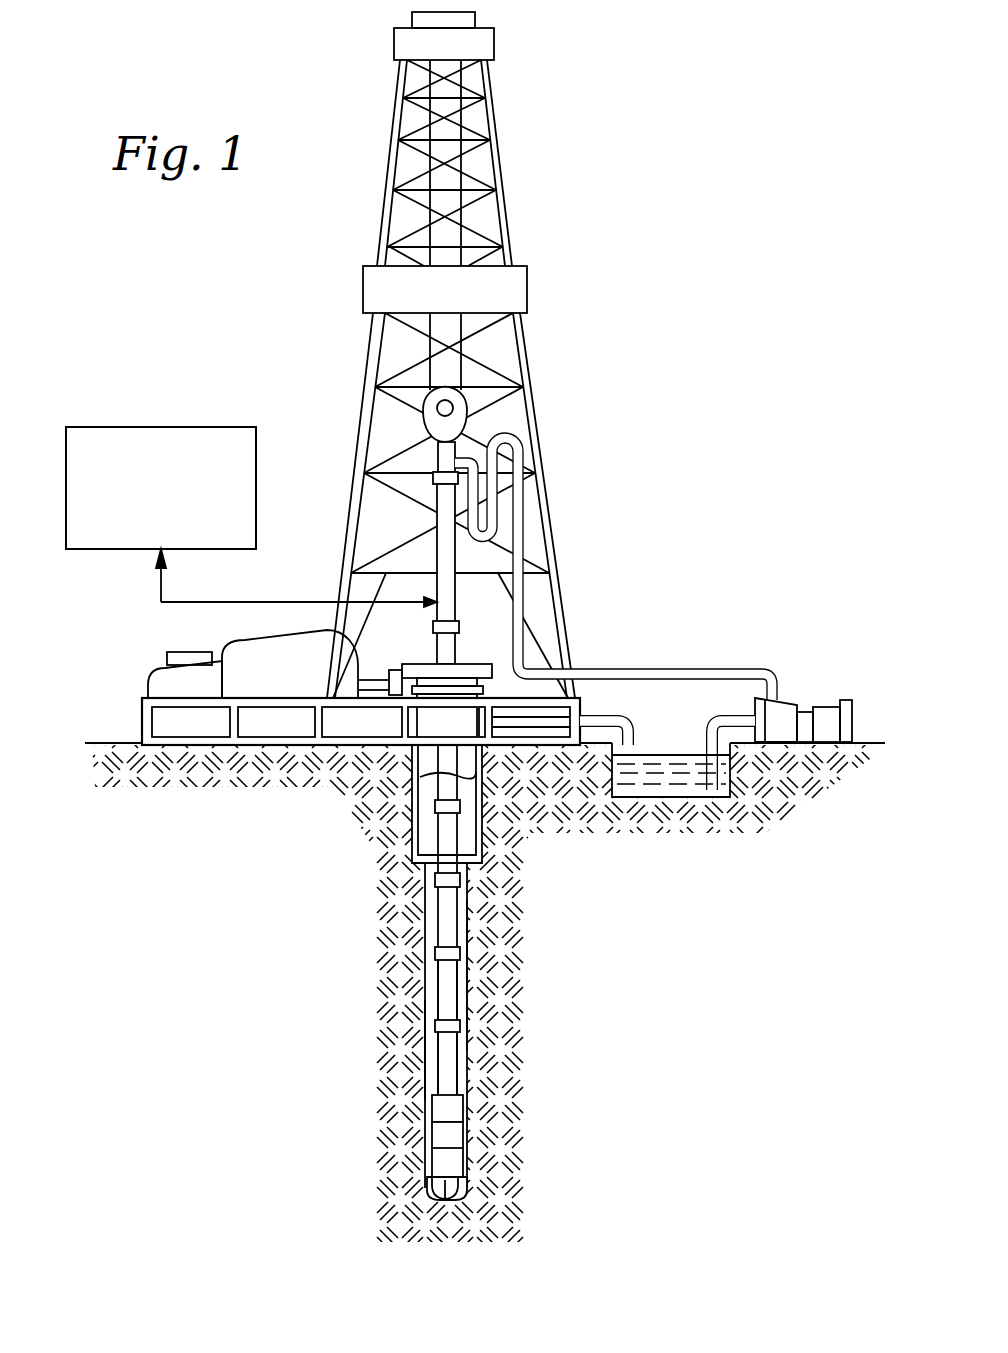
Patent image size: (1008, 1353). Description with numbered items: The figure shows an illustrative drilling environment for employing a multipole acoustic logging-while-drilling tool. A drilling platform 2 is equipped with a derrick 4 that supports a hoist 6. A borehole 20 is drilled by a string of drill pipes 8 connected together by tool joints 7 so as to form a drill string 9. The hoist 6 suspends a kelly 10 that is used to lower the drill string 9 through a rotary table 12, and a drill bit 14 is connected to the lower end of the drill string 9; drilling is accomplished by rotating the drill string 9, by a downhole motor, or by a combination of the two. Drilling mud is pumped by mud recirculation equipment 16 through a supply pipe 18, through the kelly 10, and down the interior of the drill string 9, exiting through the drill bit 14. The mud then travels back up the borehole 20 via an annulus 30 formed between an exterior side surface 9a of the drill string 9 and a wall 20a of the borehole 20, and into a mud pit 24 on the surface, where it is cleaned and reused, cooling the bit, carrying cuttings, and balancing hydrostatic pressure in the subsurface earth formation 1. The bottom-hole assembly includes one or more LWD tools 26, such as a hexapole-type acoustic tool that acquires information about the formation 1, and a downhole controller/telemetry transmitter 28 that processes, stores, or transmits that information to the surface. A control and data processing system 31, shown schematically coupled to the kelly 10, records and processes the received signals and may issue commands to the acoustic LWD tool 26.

The subsurface earth formation 1 is at (512, 929).
The drilling platform 2 is at (142, 713).
The derrick 4 is at (500, 163).
The hoist 6 is at (426, 425).
The tool joints 7 is at (448, 880).
The drill pipes 8 is at (447, 837).
The drill string 9 is at (425, 1004).
The exterior side surface 9a is at (447, 982).
The kelly 10 is at (437, 560).
The rotary table 12 is at (476, 661).
The drill bit 14 is at (438, 1192).
The mud recirculation equipment 16 is at (790, 700).
The supply pipe 18 is at (667, 667).
The borehole 20 is at (420, 1074).
The wall of the borehole 20a is at (425, 1040).
The mud pit 24 is at (660, 757).
The LWD tool 26 is at (450, 1138).
The downhole controller/telemetry transmitter 28 is at (450, 1112).
The annulus 30 is at (465, 994).
The control and data processing system 31 is at (193, 426).